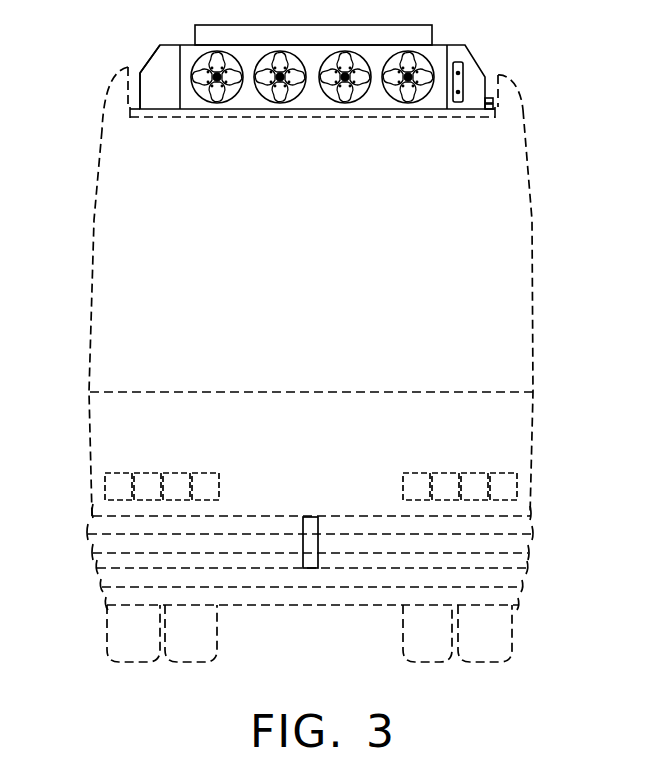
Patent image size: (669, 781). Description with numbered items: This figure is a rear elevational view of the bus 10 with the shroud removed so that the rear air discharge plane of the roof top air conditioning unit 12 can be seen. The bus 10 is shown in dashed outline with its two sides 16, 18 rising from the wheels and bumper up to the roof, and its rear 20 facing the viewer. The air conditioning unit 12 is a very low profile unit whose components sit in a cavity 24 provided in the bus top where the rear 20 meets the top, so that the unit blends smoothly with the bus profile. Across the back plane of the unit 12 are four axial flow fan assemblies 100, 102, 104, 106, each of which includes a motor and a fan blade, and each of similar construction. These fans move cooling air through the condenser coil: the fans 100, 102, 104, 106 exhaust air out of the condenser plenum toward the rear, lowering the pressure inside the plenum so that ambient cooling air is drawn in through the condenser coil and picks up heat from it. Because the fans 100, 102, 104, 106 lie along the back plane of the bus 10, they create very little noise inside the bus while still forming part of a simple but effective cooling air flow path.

The bus 10 is at (53, 209).
The roof top air conditioning unit 12 is at (457, 45).
The side 16 is at (89, 346).
The side 18 is at (533, 342).
The rear 20 is at (478, 303).
The cavity 24 is at (136, 70).
The axial flow fan assembly 100 is at (219, 104).
The axial flow fan assembly 102 is at (282, 104).
The axial flow fan assembly 104 is at (347, 104).
The axial flow fan assembly 106 is at (411, 104).